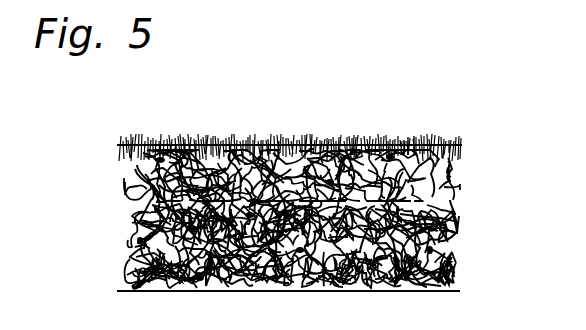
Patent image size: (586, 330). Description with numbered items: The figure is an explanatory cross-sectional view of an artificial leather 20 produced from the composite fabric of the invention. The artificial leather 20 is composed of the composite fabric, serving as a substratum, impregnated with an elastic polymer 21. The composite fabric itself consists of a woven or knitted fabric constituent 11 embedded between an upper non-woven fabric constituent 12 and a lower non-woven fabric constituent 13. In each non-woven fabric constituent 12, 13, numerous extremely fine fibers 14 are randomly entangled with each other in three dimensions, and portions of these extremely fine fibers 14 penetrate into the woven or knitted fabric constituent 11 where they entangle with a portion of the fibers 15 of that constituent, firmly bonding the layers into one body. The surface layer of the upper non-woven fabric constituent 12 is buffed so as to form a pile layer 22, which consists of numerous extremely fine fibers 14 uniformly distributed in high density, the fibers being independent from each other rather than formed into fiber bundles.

The artificial leather 20 is at (274, 125).
The pile layer 22 is at (100, 123).
The upper non-woven fabric constituent 12 is at (100, 160).
The woven or knitted fabric constituent 11 is at (100, 202).
The lower non-woven fabric constituent 13 is at (100, 247).
The extremely fine fibers 14 is at (182, 140).
The fibers in the woven or knitted fabric constituent 15 is at (460, 221).
The elastic polymer 21 is at (412, 140).